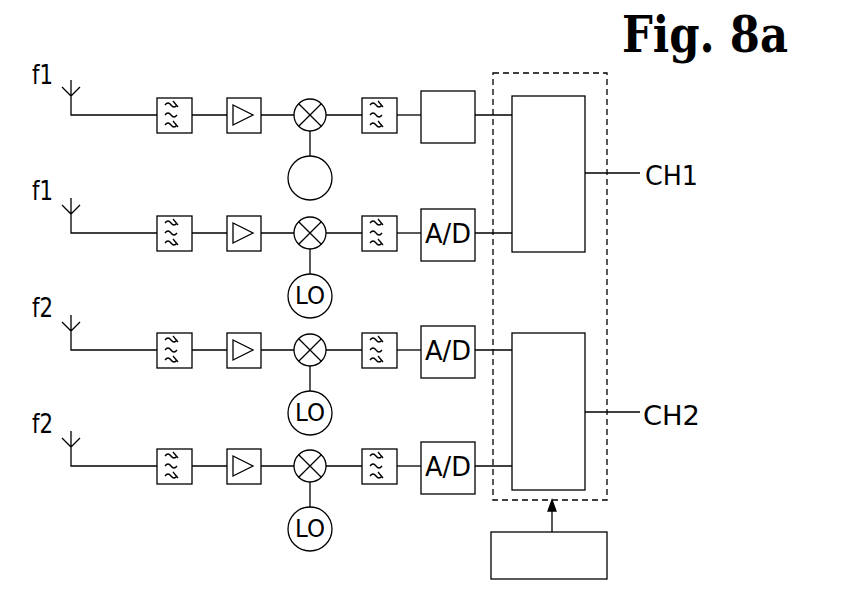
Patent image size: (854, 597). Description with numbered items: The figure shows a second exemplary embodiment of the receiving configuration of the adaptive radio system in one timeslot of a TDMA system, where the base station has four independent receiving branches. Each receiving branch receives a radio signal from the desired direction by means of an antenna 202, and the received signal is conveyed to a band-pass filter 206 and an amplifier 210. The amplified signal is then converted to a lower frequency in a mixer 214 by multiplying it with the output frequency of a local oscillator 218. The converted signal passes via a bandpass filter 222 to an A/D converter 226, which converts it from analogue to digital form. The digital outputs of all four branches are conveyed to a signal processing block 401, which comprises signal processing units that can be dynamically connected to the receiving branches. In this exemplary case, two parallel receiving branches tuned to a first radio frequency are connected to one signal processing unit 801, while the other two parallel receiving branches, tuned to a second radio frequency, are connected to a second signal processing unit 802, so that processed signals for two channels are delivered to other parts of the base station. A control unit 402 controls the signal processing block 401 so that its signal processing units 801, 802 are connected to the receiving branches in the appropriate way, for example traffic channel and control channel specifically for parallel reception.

The antenna 202 is at (70, 104).
The band-pass filter 206 is at (157, 122).
The amplifier 210 is at (226, 125).
The mixer 214 is at (310, 98).
The local oscillator 218 is at (288, 177).
The bandpass filter 222 is at (377, 133).
The A/D converter 226 is at (450, 144).
The signal processing block 401 is at (538, 73).
The signal processing unit 801 is at (585, 123).
The second signal processing unit 802 is at (585, 365).
The control unit 402 is at (491, 557).